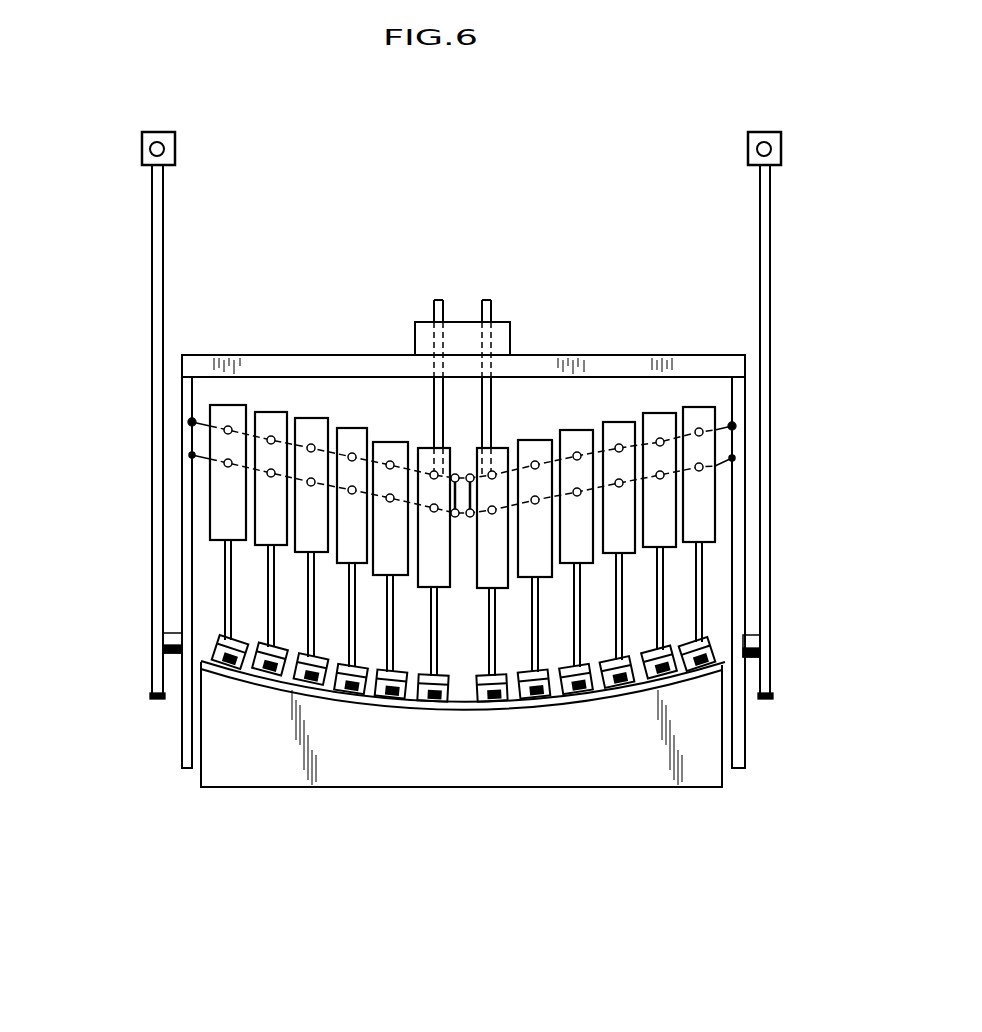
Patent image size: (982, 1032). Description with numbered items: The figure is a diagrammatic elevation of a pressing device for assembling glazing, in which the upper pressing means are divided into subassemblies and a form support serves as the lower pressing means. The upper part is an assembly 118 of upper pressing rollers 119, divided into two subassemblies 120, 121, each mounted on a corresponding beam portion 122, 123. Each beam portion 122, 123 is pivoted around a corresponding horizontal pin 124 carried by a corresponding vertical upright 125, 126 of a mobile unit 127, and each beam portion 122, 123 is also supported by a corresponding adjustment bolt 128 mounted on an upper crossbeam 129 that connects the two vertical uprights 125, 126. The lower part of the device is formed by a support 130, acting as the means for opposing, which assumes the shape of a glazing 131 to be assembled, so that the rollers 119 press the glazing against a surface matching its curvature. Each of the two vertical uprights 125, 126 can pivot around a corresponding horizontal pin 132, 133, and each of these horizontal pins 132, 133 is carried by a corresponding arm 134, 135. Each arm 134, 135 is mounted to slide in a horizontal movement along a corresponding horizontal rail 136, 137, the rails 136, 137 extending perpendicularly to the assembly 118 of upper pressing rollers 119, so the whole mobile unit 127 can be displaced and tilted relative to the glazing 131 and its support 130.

The assembly of upper pressing rollers 118 is at (708, 619).
The upper pressing roller 119 is at (222, 667).
The subassembly 120 is at (310, 402).
The subassembly 121 is at (633, 400).
The beam portion 122 is at (193, 420).
The beam portion 123 is at (732, 426).
The horizontal pin 124 is at (192, 455).
The vertical upright 125 is at (192, 378).
The vertical upright 126 is at (745, 522).
The mobile unit 127 is at (553, 420).
The adjustment bolt 128 is at (492, 398).
The upper crossbeam 129 is at (338, 354).
The support 130 is at (303, 770).
The glazing 131 is at (430, 706).
The horizontal pin 132 is at (163, 650).
The horizontal pin 133 is at (768, 660).
The arm 134 is at (163, 545).
The arm 135 is at (762, 343).
The horizontal rail 136 is at (172, 142).
The horizontal rail 137 is at (750, 150).